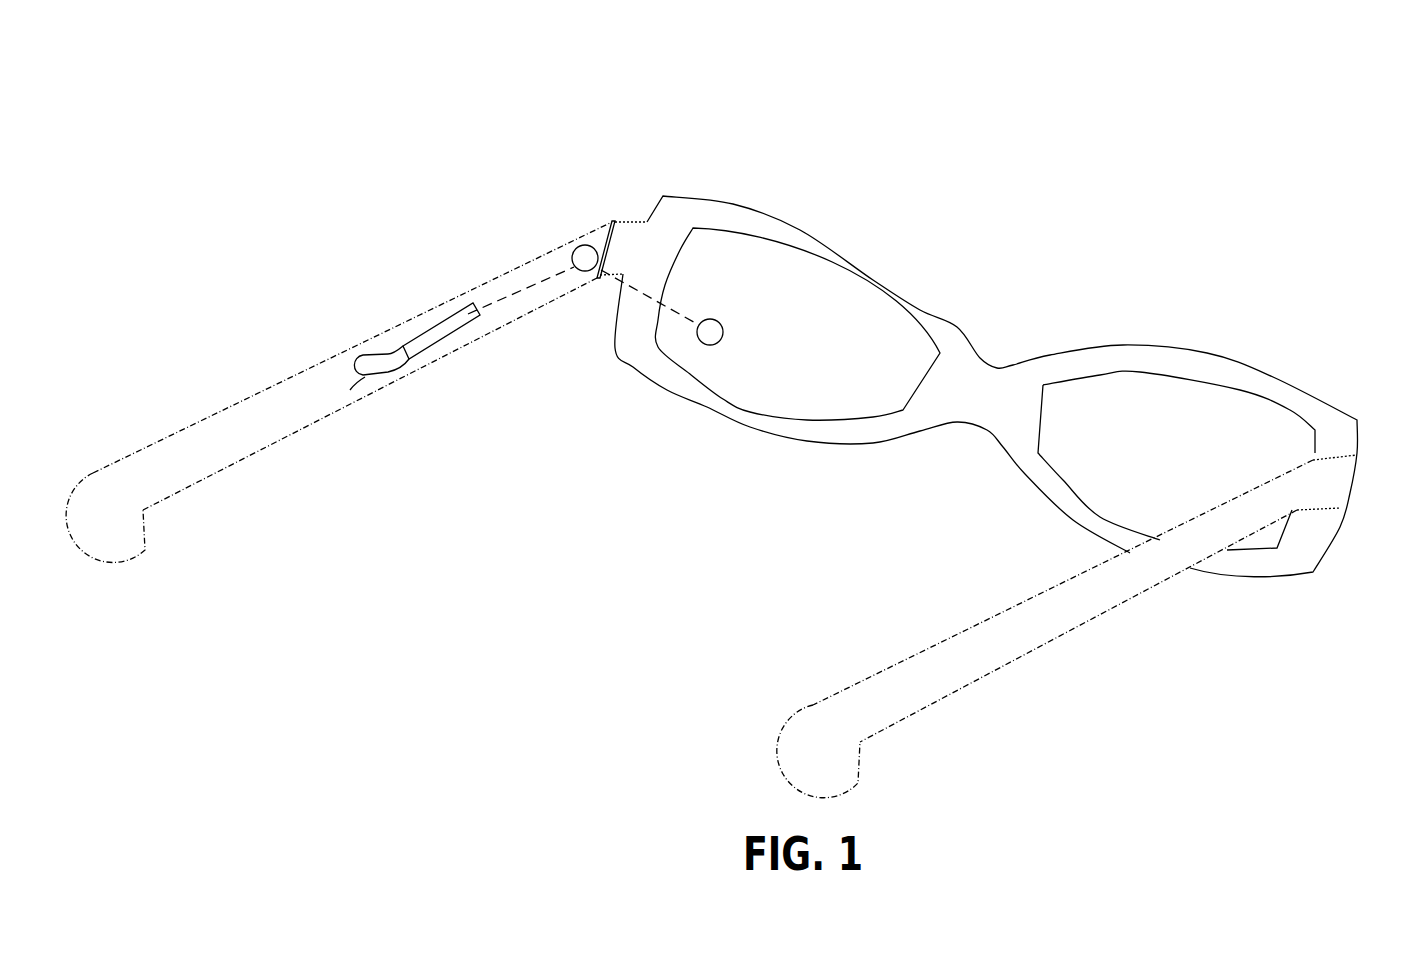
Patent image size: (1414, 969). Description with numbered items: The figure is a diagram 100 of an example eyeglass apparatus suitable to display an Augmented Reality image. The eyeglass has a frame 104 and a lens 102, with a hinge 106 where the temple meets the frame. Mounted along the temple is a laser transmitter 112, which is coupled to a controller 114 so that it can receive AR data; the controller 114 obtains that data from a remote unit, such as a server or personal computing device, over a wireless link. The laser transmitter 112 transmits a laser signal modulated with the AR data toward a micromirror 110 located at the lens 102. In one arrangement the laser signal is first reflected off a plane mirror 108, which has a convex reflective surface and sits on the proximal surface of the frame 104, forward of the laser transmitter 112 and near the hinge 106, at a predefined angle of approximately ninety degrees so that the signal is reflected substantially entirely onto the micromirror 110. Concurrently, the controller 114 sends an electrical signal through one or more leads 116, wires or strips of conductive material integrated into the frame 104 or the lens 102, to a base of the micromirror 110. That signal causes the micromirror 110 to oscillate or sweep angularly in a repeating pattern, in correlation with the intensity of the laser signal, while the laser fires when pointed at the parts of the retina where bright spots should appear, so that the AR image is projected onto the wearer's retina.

The diagram 100 is at (738, 421).
The lens 102 is at (862, 312).
The frame 104 is at (767, 220).
The hinge 106 is at (615, 222).
The plane mirror 108 is at (577, 273).
The micromirror 110 is at (723, 318).
The laser transmitter 112 is at (427, 330).
The controller 114 is at (350, 390).
The leads 116 is at (542, 280).